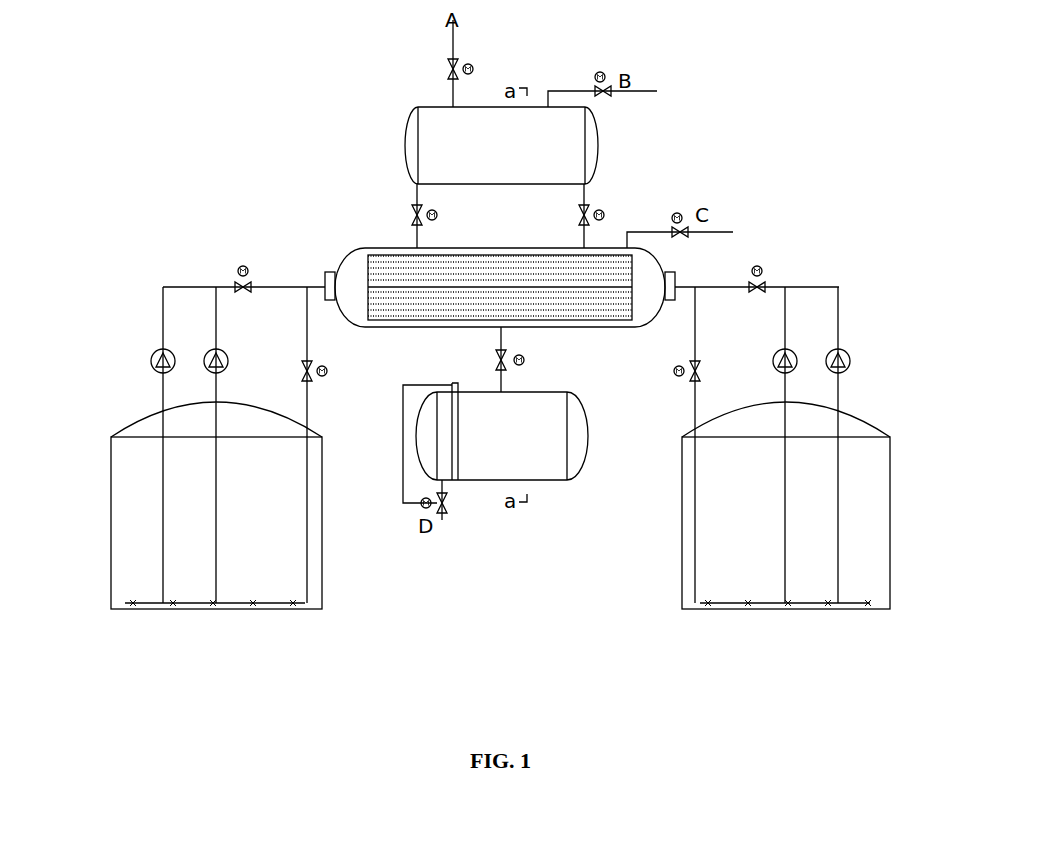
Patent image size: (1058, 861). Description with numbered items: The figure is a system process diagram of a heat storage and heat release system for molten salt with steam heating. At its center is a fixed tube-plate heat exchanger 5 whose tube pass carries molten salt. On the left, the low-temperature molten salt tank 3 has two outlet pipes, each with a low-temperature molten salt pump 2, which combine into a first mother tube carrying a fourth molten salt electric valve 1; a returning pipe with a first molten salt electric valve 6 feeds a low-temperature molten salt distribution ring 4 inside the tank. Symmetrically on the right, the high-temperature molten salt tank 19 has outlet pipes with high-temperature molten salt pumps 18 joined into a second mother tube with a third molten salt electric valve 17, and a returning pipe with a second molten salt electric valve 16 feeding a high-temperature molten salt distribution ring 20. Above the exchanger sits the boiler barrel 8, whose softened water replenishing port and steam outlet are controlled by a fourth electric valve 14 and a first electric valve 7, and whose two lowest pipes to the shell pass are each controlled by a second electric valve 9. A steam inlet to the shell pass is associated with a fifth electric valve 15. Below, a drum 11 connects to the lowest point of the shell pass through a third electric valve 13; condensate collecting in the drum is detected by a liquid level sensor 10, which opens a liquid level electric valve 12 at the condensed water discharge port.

The fourth molten salt electric valve 1 is at (235, 283).
The low-temperature molten salt pump 2 is at (216, 350).
The low-temperature molten salt tank 3 is at (111, 437).
The low-temperature molten salt distribution ring 4 is at (125, 603).
The fixed tube-plate heat exchanger 5 is at (325, 283).
The first molten salt electric valve 6 is at (305, 362).
The first electric valve 7 is at (447, 66).
The boiler barrel 8 is at (404, 145).
The second electric valve 9 is at (578, 212).
The liquid level sensor 10 is at (450, 383).
The drum 11 is at (417, 432).
The liquid level electric valve 12 is at (420, 500).
The third electric valve 13 is at (495, 355).
The fourth electric valve 14 is at (608, 78).
The fifth electric valve 15 is at (690, 230).
The second molten salt electric valve 16 is at (697, 362).
The third molten salt electric valve 17 is at (767, 282).
The high-temperature molten salt pump 18 is at (839, 350).
The high-temperature molten salt tank 19 is at (890, 437).
The high-temperature molten salt distribution ring 20 is at (877, 603).